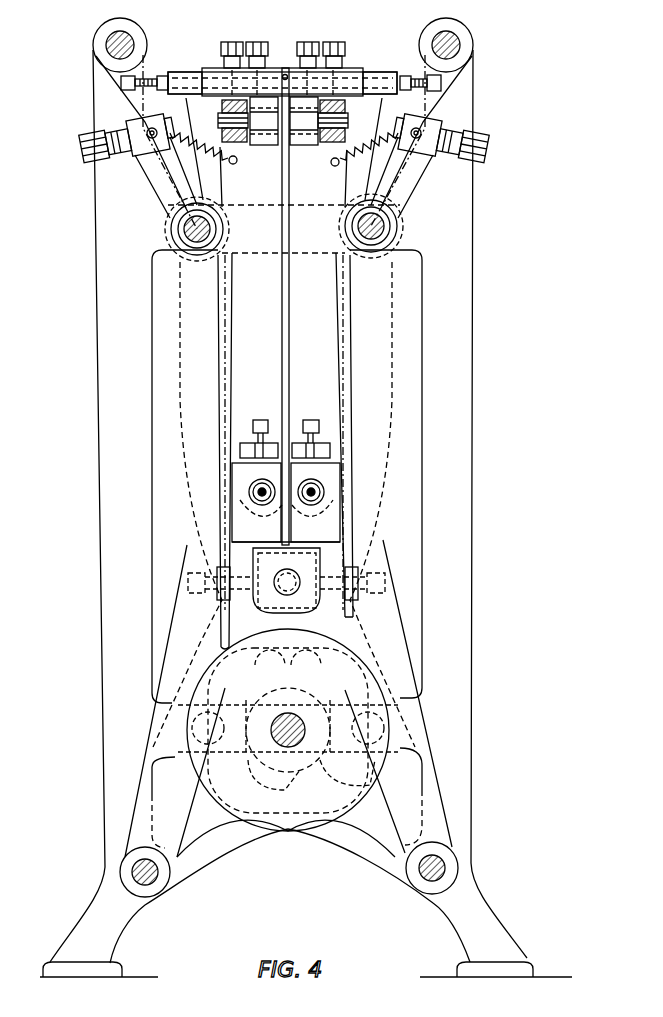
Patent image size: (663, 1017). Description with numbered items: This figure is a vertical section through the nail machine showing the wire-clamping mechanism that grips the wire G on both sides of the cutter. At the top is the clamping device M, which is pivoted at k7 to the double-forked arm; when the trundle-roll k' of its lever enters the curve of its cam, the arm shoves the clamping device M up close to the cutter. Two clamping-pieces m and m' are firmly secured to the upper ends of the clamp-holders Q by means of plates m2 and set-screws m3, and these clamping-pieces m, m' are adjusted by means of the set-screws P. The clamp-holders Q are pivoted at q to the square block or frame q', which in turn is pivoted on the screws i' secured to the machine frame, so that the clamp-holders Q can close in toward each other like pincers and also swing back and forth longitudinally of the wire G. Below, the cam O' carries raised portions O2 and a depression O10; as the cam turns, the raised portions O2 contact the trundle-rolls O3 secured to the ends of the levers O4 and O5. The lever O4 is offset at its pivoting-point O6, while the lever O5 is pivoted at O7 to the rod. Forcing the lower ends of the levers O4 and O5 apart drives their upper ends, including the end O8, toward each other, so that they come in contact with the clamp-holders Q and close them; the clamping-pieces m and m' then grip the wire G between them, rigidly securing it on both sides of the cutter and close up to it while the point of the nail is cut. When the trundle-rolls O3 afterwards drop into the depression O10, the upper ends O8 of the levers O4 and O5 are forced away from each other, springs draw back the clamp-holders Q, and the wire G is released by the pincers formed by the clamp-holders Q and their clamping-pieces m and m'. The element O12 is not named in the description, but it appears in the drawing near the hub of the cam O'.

The clamping device M is at (298, 135).
The clamping-piece m is at (282, 59).
The plates m2 is at (232, 66).
The set-screws m3 is at (234, 42).
The clamping-piece m' is at (279, 285).
The wire G is at (286, 74).
The pivot of arm to clamping device k7 is at (244, 142).
The trundle-roll k' is at (285, 135).
The set-screws P is at (120, 83).
The trundle-rolls O3 is at (128, 150).
The upper end of lever O8 is at (420, 133).
The lever O4 is at (228, 165).
The lever O5 is at (340, 165).
The pivoting-point O6 is at (185, 236).
The pivot O7 is at (385, 230).
The clamp-holders Q is at (285, 451).
The square block or frame q' is at (306, 522).
The pivot of clamp-holders q is at (285, 586).
The screws i' is at (287, 573).
The cam O' is at (288, 750).
The inner hub ring O12 is at (291, 730).
The raised portions O2 is at (274, 775).
The depression O10 is at (347, 773).